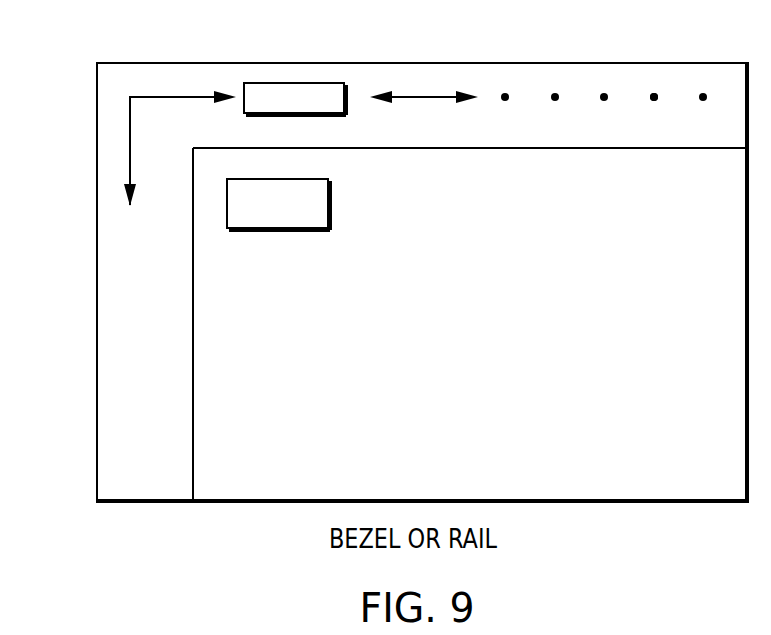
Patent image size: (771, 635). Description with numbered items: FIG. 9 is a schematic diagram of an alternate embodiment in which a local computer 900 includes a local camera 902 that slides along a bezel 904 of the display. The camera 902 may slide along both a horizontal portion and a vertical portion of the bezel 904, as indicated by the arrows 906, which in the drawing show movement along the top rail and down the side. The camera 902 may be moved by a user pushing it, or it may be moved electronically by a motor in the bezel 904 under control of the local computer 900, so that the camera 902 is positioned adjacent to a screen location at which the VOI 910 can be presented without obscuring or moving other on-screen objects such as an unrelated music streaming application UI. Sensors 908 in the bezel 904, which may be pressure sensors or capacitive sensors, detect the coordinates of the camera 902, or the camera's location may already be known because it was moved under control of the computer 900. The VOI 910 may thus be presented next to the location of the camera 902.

The local computer 900 is at (97, 281).
The local camera 902 is at (293, 83).
The bezel 904 is at (505, 78).
The arrows 906 is at (423, 96).
The sensors 908 is at (654, 93).
The VOI 910 is at (278, 229).